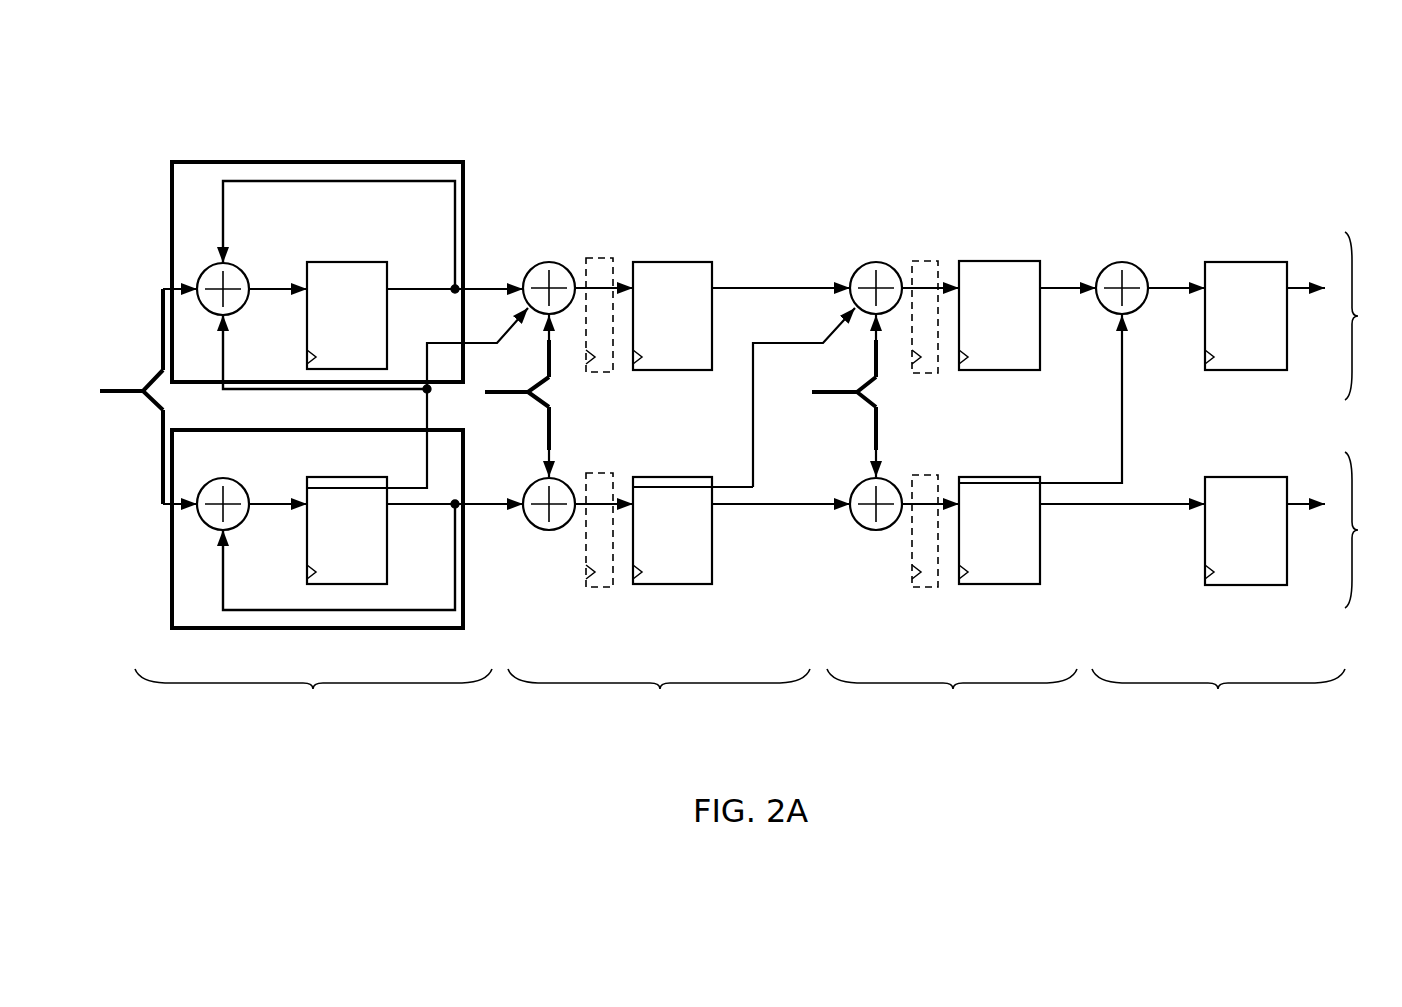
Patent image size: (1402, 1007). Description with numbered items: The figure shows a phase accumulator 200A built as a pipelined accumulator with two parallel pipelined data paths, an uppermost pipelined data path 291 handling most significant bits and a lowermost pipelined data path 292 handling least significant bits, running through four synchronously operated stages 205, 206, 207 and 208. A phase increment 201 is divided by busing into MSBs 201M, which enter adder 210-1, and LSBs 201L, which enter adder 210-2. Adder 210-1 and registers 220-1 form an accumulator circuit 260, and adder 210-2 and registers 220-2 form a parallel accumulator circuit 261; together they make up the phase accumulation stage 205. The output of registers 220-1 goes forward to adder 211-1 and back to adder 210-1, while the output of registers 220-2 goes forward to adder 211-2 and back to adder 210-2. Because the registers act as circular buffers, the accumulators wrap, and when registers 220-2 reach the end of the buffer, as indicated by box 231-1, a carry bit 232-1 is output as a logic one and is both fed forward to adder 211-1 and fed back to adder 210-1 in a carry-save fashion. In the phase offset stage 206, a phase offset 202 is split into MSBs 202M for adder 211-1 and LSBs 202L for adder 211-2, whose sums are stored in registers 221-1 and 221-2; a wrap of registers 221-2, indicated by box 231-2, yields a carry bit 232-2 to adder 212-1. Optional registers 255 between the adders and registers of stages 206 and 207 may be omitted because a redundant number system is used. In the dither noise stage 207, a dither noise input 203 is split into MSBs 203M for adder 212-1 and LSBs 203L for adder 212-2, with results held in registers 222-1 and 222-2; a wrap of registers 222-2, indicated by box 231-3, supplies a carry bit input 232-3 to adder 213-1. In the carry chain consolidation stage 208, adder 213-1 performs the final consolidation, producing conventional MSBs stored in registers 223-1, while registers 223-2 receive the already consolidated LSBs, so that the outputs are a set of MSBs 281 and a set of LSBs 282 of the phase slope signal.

The phase accumulator 200A is at (1233, 103).
The phase increment 201 is at (120, 395).
The MSBs of phase increment 201M is at (145, 308).
The LSBs of phase increment 201L is at (148, 493).
The phase offset 202 is at (505, 395).
The MSBs of phase offset 202M is at (548, 355).
The LSBs of phase offset 202L is at (551, 428).
The dither noise input 203 is at (832, 395).
The MSBs of dither noise input 203M is at (874, 355).
The LSBs of dither noise input 203L is at (878, 428).
The phase accumulation stage 205 is at (313, 694).
The phase offset stage 206 is at (659, 694).
The dither noise stage 207 is at (952, 694).
The carry chain consolidation stage 208 is at (1218, 694).
The adder 210-1 is at (242, 268).
The adder 210-2 is at (242, 483).
The adder 211-1 is at (566, 265).
The adder 211-2 is at (566, 481).
The adder 212-1 is at (895, 266).
The adder 212-2 is at (894, 481).
The adder 213-1 is at (1141, 266).
The registers 220-1 is at (415, 315).
The registers 220-2 is at (415, 530).
The registers 221-1 is at (741, 316).
The registers 221-2 is at (741, 530).
The registers 222-1 is at (1027, 315).
The registers 222-2 is at (1082, 530).
The registers 223-1 is at (1246, 316).
The registers 223-2 is at (1246, 531).
The box 231-1 is at (330, 487).
The box 231-2 is at (668, 483).
The box 231-3 is at (1025, 480).
The carry bit 232-1 is at (427, 418).
The carry bit 232-2 is at (755, 465).
The carry bit input 232-3 is at (1124, 450).
The registers 255 is at (600, 373).
The accumulator circuit 260 is at (355, 162).
The accumulator circuit 261 is at (465, 615).
The set of MSBs 281 is at (1296, 283).
The set of LSBs 282 is at (1296, 497).
The uppermost pipelined data path 291 is at (1373, 316).
The lowermost pipelined data path 292 is at (1373, 530).